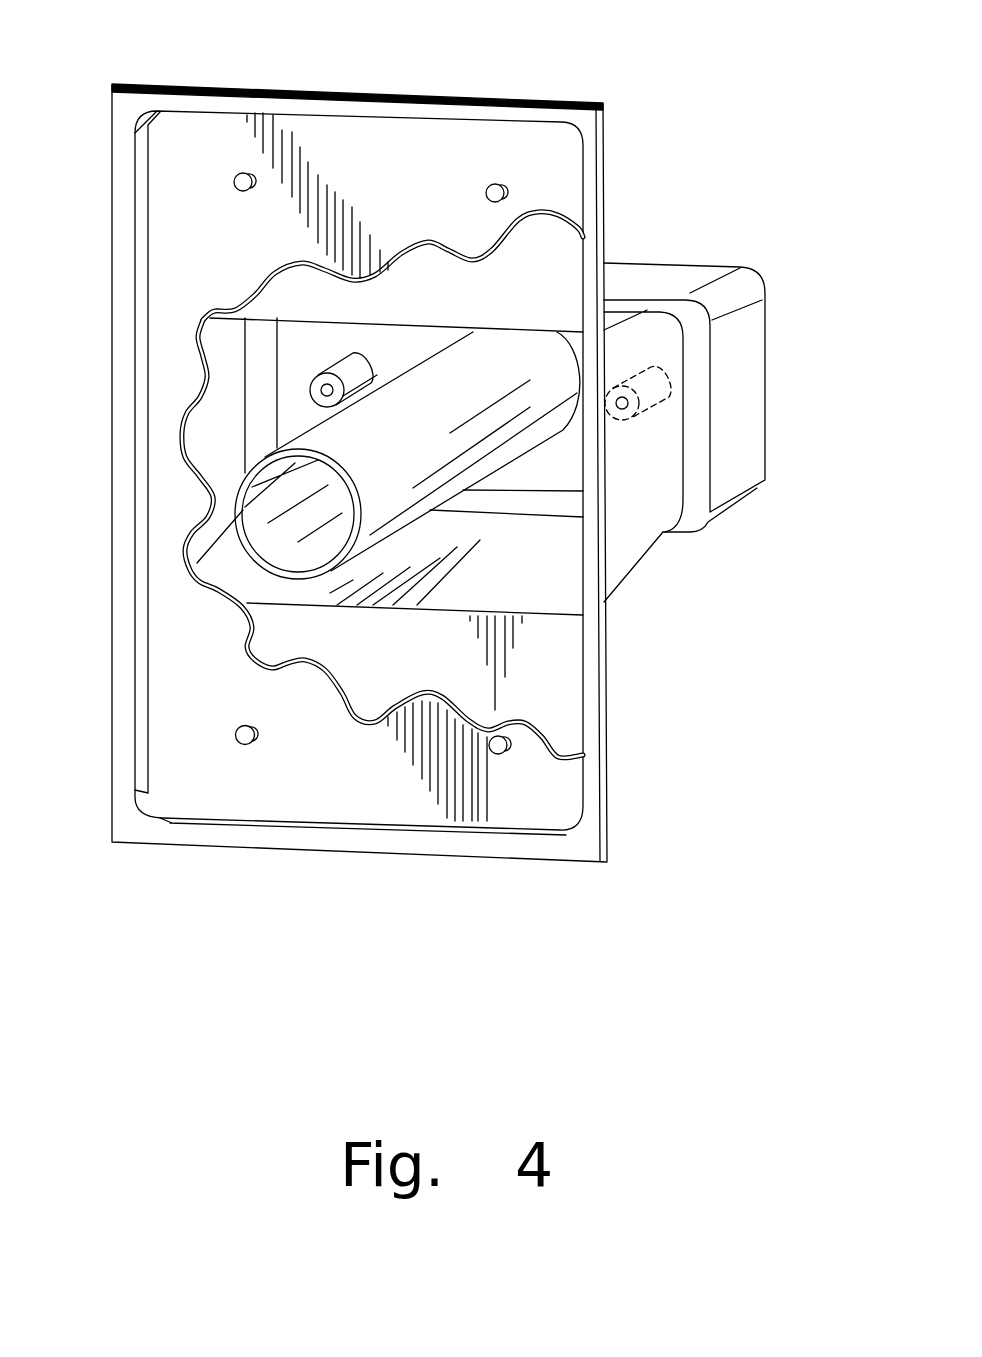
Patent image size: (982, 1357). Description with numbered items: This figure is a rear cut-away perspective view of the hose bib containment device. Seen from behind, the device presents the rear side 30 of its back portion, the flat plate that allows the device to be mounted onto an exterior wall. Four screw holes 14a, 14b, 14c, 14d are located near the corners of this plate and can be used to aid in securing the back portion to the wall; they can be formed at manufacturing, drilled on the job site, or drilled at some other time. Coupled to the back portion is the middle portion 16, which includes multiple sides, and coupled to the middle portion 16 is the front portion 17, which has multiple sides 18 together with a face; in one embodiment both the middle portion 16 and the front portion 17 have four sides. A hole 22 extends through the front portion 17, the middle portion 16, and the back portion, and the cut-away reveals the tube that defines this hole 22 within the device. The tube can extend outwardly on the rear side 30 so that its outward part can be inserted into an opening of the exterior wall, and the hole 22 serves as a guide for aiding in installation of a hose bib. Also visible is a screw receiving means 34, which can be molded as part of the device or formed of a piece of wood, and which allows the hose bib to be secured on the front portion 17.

The screw hole 14a is at (493, 183).
The screw hole 14b is at (243, 172).
The screw hole 14c is at (502, 756).
The screw hole 14d is at (246, 745).
The middle portion 16 is at (627, 533).
The front portion 17 is at (803, 230).
The sides 18 is at (652, 287).
The hole 22 is at (333, 443).
The rear side 30 is at (200, 232).
The screw receiving means 34 is at (313, 381).